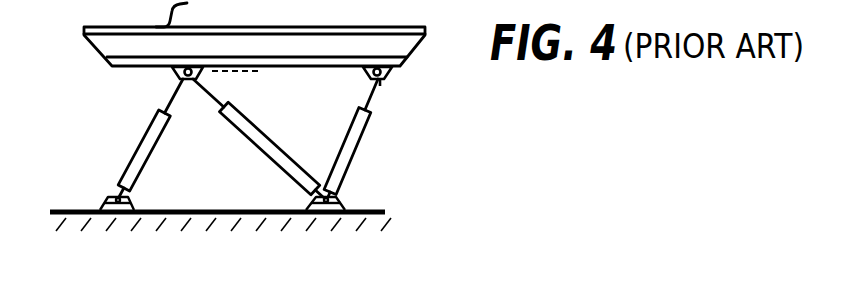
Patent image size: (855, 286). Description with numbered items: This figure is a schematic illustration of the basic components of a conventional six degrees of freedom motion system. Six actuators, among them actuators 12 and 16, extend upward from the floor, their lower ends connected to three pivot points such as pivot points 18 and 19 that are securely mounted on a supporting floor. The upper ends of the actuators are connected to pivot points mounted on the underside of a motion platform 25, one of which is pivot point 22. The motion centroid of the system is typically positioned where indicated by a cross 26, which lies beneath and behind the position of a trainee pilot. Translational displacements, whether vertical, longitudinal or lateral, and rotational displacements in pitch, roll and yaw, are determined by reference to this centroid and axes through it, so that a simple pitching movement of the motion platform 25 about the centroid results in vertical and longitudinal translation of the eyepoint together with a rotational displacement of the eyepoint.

The actuator 12 is at (246, 131).
The actuator 16 is at (137, 166).
The pivot point 18 is at (118, 216).
The pivot point 19 is at (337, 214).
The pivot point 22 is at (172, 78).
The motion platform 25 is at (295, 249).
The cross 26 is at (236, 73).